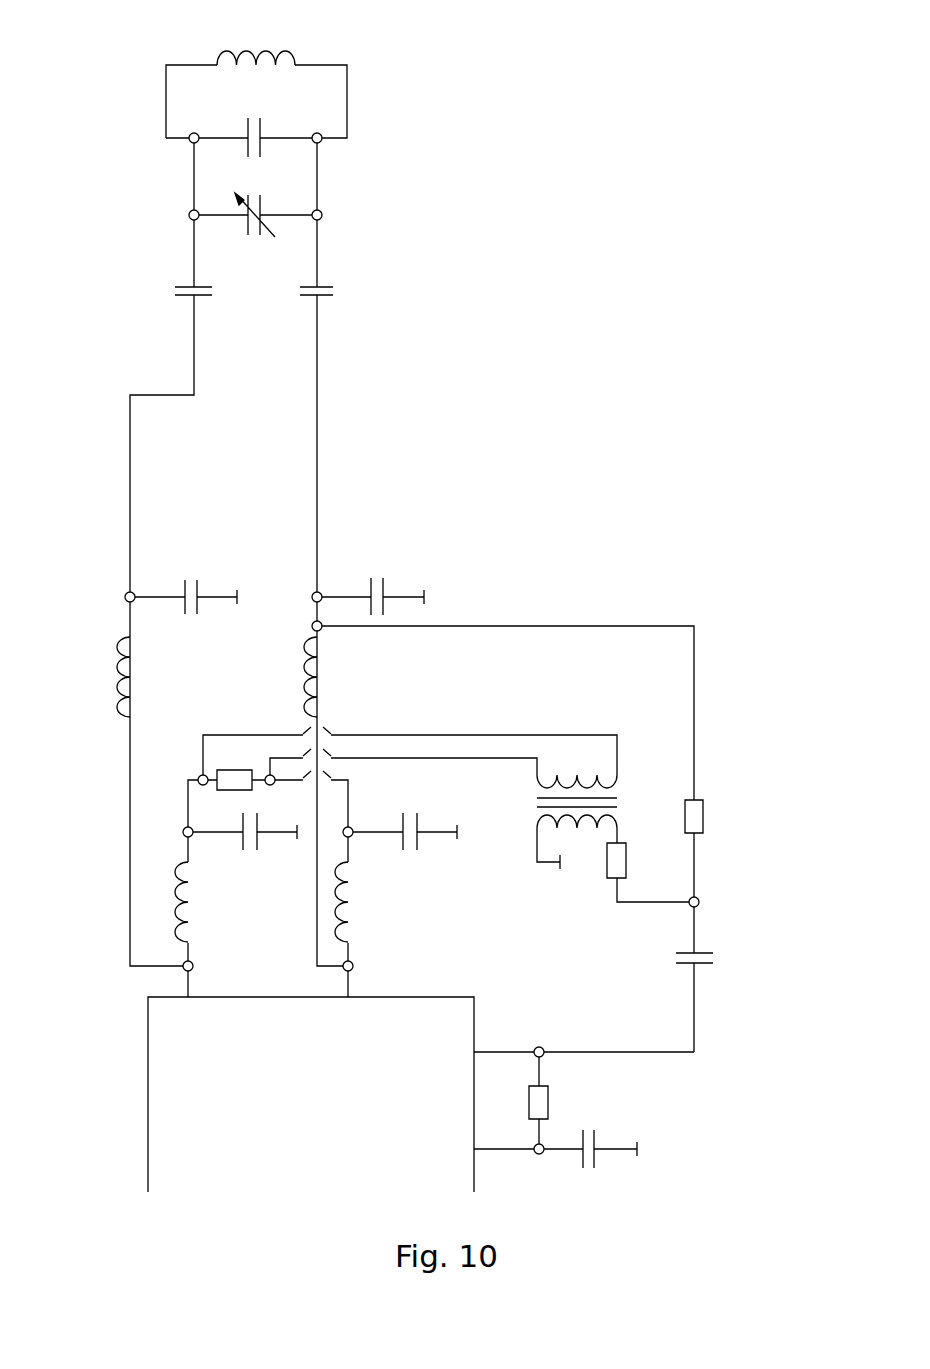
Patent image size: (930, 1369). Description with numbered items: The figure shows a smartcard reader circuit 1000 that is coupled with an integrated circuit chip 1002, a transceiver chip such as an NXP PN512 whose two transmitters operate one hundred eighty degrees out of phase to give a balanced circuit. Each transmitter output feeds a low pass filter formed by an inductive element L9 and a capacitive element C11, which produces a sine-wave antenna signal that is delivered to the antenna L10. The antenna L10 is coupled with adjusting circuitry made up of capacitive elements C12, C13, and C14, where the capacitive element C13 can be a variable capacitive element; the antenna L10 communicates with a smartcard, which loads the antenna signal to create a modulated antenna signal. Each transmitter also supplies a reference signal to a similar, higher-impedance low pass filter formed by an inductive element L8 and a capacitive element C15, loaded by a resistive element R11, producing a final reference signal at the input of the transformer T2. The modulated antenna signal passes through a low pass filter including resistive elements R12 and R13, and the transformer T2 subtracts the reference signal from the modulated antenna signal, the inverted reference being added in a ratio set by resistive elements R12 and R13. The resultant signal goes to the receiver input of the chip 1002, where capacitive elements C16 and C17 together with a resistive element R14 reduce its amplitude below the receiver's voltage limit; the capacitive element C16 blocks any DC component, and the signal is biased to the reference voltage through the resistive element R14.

The antenna L10 is at (217, 55).
The capacitive element C14 is at (255, 133).
The capacitive element C13 is at (279, 215).
The capacitive element C12 is at (254, 295).
The capacitive element C11 is at (279, 585).
The inductive element L9 is at (201, 677).
The resistive element R11 is at (236, 768).
The capacitive element C15 is at (325, 846).
The inductive element L8 is at (276, 902).
The transformer T2 is at (577, 789).
The resistive element R12 is at (715, 848).
The resistive element R13 is at (648, 872).
The capacitive element C16 is at (715, 979).
The resistive element R14 is at (516, 1100).
The capacitive element C17 is at (590, 1163).
The smartcard reader circuit 1000 is at (525, 427).
The integrated circuit chip 1002 is at (148, 1130).